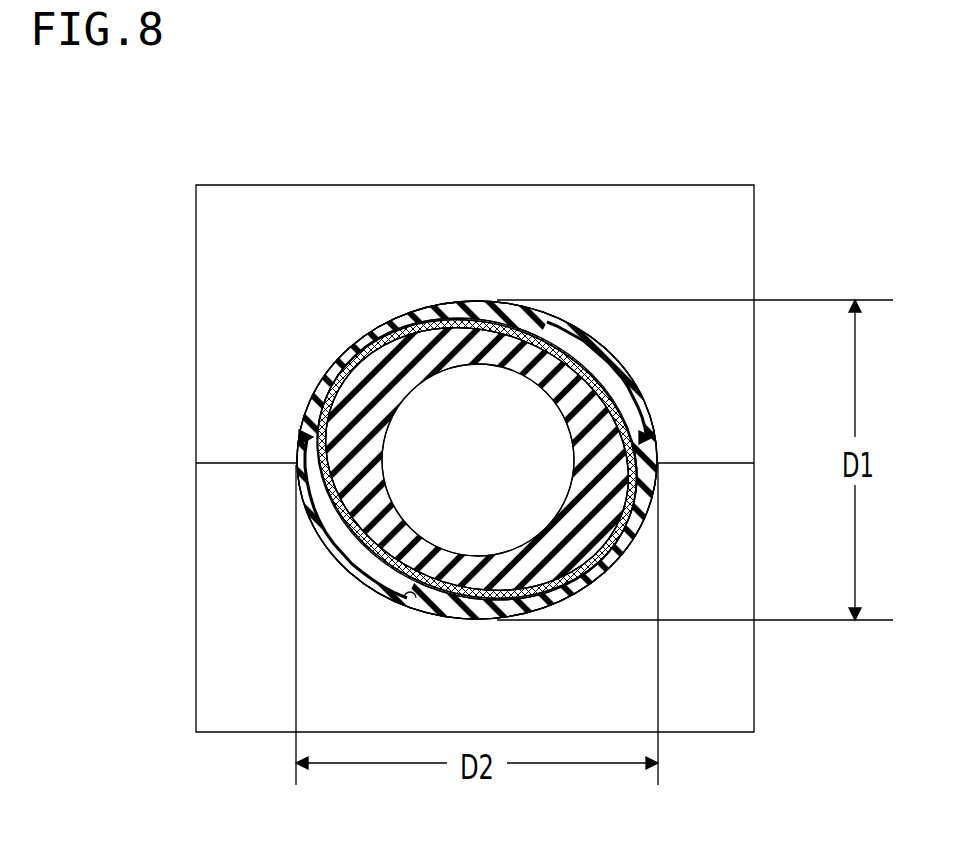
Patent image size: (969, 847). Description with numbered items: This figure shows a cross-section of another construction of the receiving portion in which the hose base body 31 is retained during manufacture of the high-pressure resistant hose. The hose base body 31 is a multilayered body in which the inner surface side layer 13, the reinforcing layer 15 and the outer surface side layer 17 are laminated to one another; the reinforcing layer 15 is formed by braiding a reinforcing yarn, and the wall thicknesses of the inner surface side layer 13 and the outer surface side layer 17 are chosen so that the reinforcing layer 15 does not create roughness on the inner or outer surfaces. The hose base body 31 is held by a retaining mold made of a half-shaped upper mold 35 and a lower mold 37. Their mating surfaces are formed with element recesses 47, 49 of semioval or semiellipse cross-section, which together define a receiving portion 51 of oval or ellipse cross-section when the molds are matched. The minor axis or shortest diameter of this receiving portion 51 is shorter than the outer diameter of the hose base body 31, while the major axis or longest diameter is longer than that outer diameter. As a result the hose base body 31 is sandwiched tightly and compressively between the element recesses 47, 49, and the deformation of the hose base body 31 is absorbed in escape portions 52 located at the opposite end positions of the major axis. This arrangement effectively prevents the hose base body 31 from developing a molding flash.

The inner surface side layer 13 is at (348, 383).
The reinforcing layer 15 is at (372, 330).
The outer surface side layer 17 is at (398, 324).
The hose base body 31 is at (452, 289).
The upper mold 35 is at (282, 256).
The lower mold 37 is at (698, 652).
The element recess 47 is at (313, 388).
The element recess 49 is at (411, 600).
The receiving portion 51 is at (419, 322).
The escape portions 52 is at (297, 433).